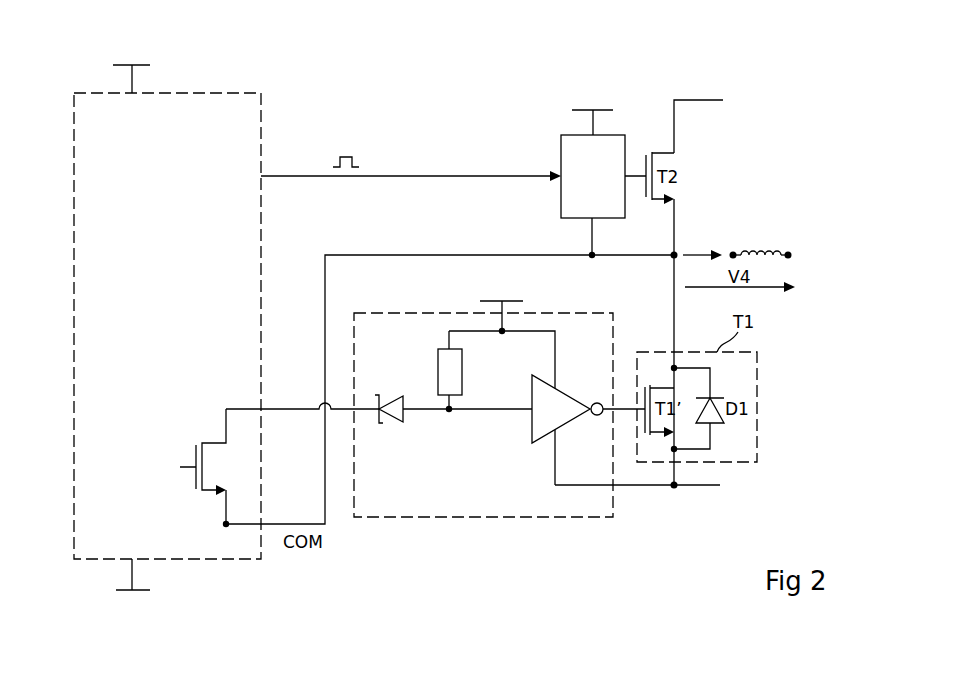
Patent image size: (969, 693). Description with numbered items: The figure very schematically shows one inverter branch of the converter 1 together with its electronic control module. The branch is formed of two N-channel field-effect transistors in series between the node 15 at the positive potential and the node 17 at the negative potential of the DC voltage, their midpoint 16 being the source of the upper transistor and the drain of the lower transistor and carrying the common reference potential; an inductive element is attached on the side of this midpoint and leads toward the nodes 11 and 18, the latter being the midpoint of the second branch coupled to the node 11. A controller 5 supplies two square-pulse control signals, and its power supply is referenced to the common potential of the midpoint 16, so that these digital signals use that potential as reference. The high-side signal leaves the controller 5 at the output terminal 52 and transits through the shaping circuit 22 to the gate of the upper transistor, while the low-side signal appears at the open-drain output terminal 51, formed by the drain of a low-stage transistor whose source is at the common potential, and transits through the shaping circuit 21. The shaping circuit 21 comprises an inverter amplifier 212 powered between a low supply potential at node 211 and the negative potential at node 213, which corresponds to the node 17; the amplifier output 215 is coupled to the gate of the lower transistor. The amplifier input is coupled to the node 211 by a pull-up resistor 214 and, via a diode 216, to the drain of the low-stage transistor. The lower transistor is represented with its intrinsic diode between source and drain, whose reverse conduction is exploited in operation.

The converter 1 is at (654, 44).
The controller 5 is at (196, 93).
The node 11 is at (734, 252).
The node 15 is at (710, 101).
The midpoint 16 is at (672, 254).
The node 17 is at (710, 486).
The midpoint 18 is at (789, 252).
The shaping circuit 21 is at (418, 517).
The shaping circuit 22 is at (561, 140).
The output terminal 51 is at (260, 408).
The output terminal 52 is at (261, 176).
The node 211 is at (506, 310).
The inverter amplifier 212 is at (532, 430).
The node 213 is at (619, 487).
The pull-up resistor 214 is at (463, 377).
The output 215 is at (622, 398).
The diode 216 is at (385, 398).